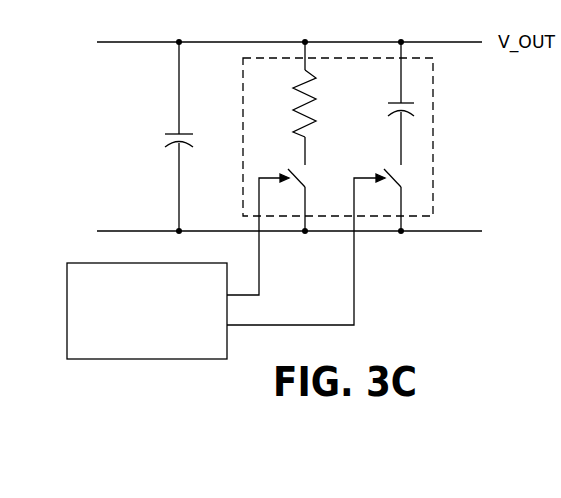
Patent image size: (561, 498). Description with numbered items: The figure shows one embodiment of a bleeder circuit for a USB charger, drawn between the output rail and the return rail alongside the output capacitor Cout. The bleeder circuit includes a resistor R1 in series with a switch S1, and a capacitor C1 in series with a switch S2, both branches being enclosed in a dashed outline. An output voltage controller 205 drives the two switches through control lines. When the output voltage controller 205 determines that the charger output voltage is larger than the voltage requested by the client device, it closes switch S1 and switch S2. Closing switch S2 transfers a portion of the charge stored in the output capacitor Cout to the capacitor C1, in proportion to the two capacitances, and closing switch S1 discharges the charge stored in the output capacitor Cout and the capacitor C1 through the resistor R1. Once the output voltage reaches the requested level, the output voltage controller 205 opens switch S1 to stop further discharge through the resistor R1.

The output voltage controller 205 is at (226, 266).
The output capacitor Cout is at (153, 136).
The resistor R1 is at (288, 103).
The capacitor C1 is at (385, 103).
The switch S1 is at (310, 200).
The switch S2 is at (406, 200).